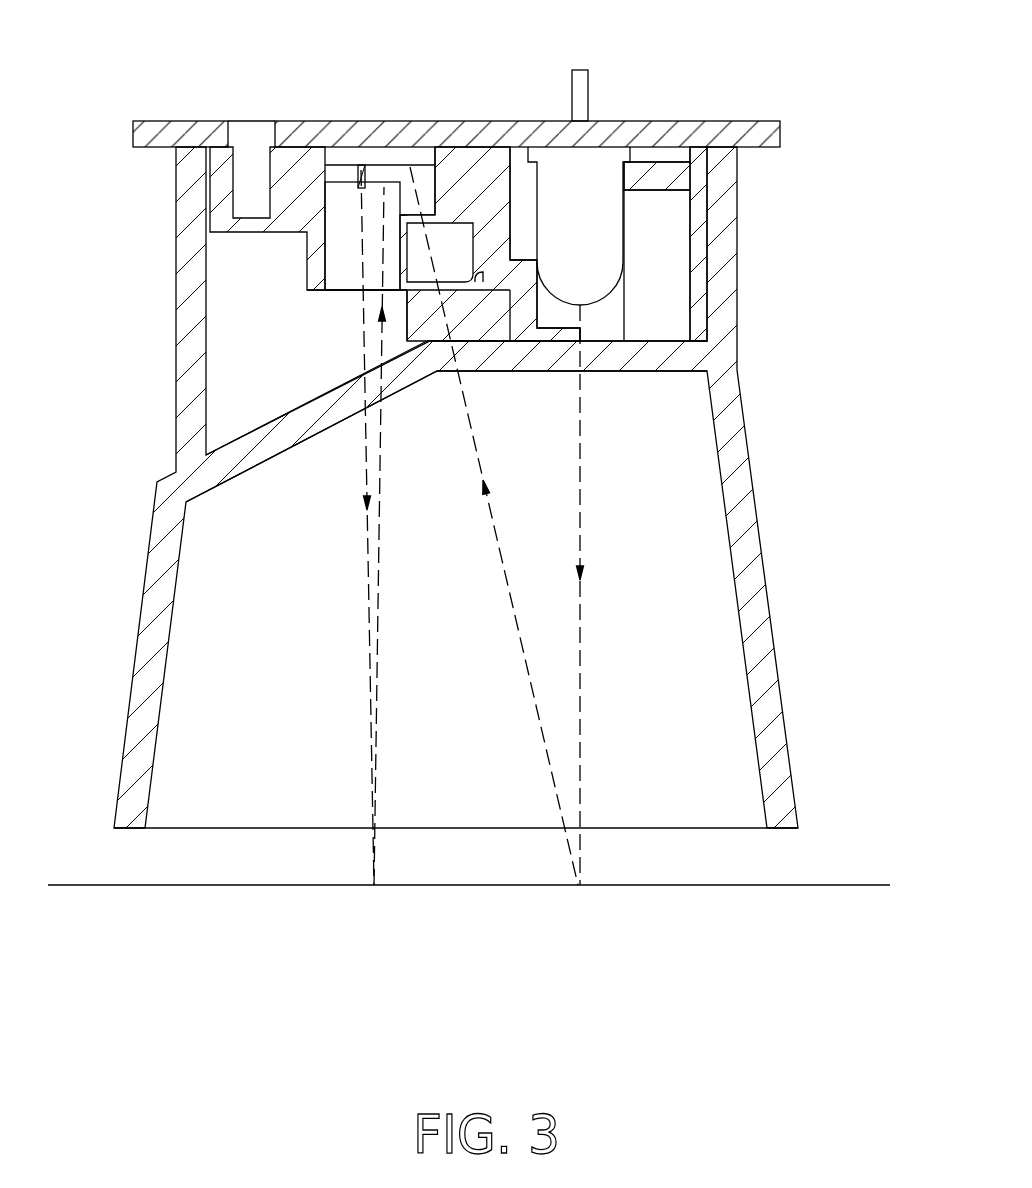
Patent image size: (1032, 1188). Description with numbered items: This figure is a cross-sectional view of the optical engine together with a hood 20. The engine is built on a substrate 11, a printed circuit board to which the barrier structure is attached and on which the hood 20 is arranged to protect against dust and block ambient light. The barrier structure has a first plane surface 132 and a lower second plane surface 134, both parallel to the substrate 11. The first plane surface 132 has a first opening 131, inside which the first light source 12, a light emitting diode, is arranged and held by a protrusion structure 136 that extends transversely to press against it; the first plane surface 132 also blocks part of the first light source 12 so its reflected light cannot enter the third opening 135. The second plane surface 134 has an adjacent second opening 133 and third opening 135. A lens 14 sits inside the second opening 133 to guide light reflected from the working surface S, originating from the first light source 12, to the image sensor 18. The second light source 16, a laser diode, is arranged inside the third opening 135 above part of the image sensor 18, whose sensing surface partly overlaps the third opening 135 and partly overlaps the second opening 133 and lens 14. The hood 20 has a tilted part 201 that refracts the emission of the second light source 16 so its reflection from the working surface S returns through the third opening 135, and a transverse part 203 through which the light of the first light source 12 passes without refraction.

The substrate 11 is at (760, 120).
The first light source 12 is at (600, 255).
The lens 14 is at (415, 285).
The second light source 16 is at (357, 173).
The image sensor 18 is at (372, 155).
The hood 20 is at (757, 620).
The first opening 131 is at (618, 302).
The first plane surface 132 is at (557, 330).
The second opening 133 is at (457, 286).
The second plane surface 134 is at (343, 277).
The third opening 135 is at (343, 277).
The protrusion structure 136 is at (660, 176).
The tilted part 201 is at (282, 433).
The transverse part 203 is at (653, 363).
The working surface S is at (817, 885).